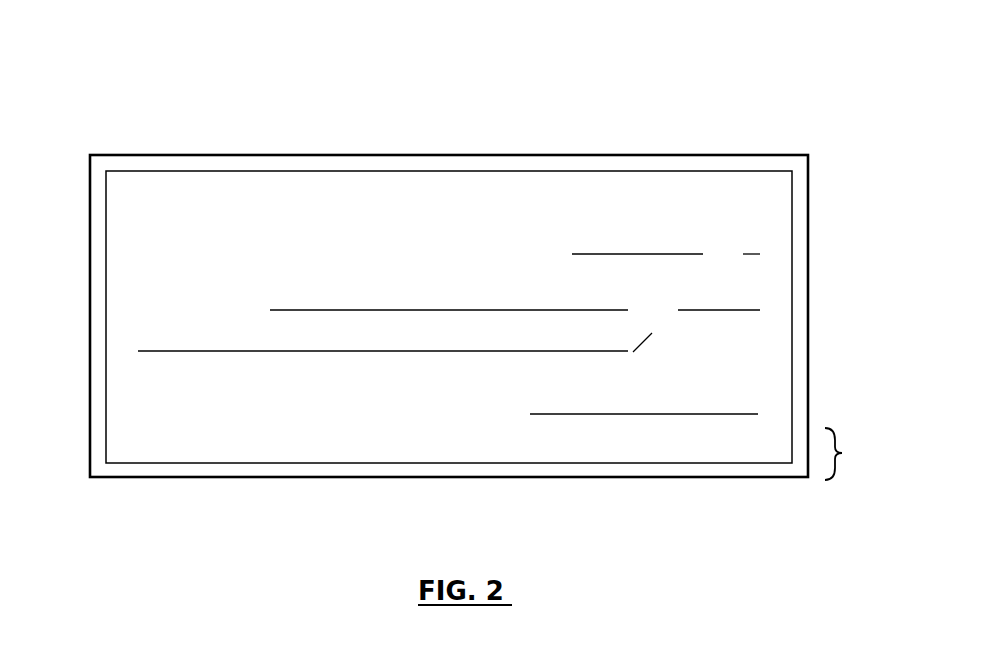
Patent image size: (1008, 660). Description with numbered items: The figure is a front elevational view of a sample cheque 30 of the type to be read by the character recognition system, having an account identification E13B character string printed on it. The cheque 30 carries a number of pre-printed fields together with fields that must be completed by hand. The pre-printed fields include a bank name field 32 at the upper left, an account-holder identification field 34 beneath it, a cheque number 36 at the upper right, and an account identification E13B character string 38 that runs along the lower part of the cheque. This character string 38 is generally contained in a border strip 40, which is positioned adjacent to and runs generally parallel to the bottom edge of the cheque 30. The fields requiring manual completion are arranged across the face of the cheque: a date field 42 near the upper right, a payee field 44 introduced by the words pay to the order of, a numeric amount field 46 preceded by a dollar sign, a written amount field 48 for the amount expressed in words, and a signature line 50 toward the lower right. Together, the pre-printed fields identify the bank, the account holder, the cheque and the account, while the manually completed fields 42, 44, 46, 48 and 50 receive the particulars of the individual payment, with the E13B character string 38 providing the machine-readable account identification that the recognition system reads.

The cheque 30 is at (555, 86).
The bank name field 32 is at (163, 165).
The account-holder identification field 34 is at (118, 218).
The cheque number 36 is at (746, 168).
The account identification E13B character string 38 is at (662, 452).
The border strip 40 is at (852, 454).
The date field 42 is at (786, 249).
The payee field 44 is at (430, 263).
The numeric amount field 46 is at (787, 294).
The written amount field 48 is at (758, 348).
The signature line 50 is at (772, 394).